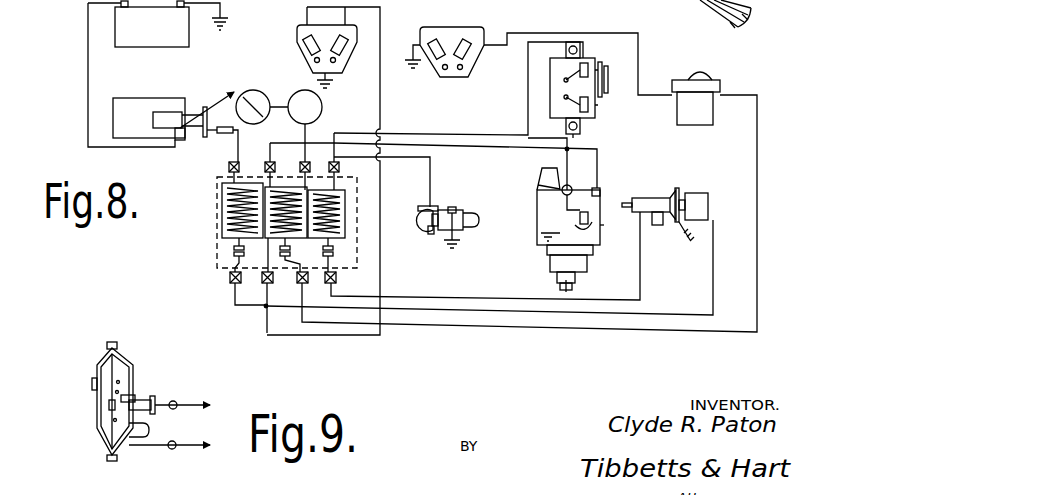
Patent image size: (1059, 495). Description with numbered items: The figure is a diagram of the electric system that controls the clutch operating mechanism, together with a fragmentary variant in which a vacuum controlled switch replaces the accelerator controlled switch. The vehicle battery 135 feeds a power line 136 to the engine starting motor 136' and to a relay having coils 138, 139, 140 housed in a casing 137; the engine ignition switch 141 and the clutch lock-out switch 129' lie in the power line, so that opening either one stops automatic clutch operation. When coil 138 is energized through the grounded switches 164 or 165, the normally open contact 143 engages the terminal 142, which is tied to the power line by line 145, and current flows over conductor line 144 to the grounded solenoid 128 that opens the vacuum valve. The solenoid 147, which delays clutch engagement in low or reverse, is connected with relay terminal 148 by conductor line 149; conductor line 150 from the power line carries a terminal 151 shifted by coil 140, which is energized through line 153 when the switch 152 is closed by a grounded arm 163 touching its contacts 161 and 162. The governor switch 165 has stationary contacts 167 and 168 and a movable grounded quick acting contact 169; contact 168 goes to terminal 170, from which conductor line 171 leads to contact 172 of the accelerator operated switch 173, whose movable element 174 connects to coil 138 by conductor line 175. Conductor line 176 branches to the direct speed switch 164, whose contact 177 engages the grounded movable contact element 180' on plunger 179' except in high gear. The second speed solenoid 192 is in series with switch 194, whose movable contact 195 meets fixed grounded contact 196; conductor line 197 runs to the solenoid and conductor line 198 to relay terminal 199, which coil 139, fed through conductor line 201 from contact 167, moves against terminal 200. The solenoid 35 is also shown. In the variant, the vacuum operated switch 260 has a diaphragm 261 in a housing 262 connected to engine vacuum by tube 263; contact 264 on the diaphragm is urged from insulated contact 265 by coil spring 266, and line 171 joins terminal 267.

In FIG. 8, the solenoid 35 is at (650, 198).
In FIG. 8, the solenoid 128 is at (655, 226).
In FIG. 8, the lock-out switch 129' is at (319, 107).
In FIG. 8, the battery 135 is at (145, 42).
In FIG. 8, the power line 136 is at (188, 75).
In FIG. 8, the engine starting motor 136' is at (173, 109).
In FIG. 8, the casing 137 is at (216, 234).
In FIG. 8, the relay coil 138 is at (345, 206).
In FIG. 8, the relay coil 139 is at (288, 183).
In FIG. 8, the relay coil 140 is at (221, 208).
In FIG. 8, the engine ignition switch 141 is at (260, 100).
In FIG. 8, the terminal 142 is at (334, 250).
In FIG. 8, the contact 143 is at (337, 279).
In FIG. 8, the conductor line 144 is at (447, 300).
In FIG. 8, the line 145 is at (308, 186).
In FIG. 8, the solenoid 147 is at (708, 207).
In FIG. 8, the relay terminal 148 is at (230, 273).
In FIG. 8, the conductor line 149 is at (247, 309).
In FIG. 8, the conductor line 150 is at (236, 152).
In FIG. 8, the terminal 151 is at (234, 252).
In FIG. 8, the switch 152 is at (291, 26).
In FIG. 8, the line 153 is at (381, 105).
In FIG. 8, the contact 161 is at (303, 50).
In FIG. 8, the contact 162 is at (348, 47).
In FIG. 8, the grounded arm 163 is at (327, 68).
In FIG. 8, the direct speed switch 164 is at (453, 207).
In FIG. 8, the switch 165 is at (534, 219).
In FIG. 8, the stationary contact 167 is at (600, 242).
In FIG. 8, the stationary contact 168 is at (580, 217).
In FIG. 8, the movable grounded quick acting contact 169 is at (575, 228).
In FIG. 8, the terminal 170 is at (537, 184).
In FIG. 8, the conductor line 171 is at (568, 152).
In FIG. 9, the conductor line 171 is at (188, 447).
In FIG. 8, the contact 172 is at (594, 112).
In FIG. 8, the accelerator operated switch 173 is at (548, 106).
In FIG. 8, the movable element 174 is at (583, 62).
In FIG. 8, the conductor line 175 is at (473, 133).
In FIG. 9, the conductor line 175 is at (196, 405).
In FIG. 8, the conductor line 176 is at (431, 188).
In FIG. 8, the contact 177 is at (413, 214).
In FIG. 8, the plunger 179' is at (470, 212).
In FIG. 8, the grounded movable contact element 180' is at (418, 245).
In FIG. 8, the solenoid 192 is at (700, 118).
In FIG. 8, the switch 194 is at (458, 31).
In FIG. 8, the movable contact 195 is at (455, 74).
In FIG. 8, the fixed grounded contact 196 is at (438, 74).
In FIG. 8, the conductor line 197 is at (553, 33).
In FIG. 8, the conductor line 198 is at (580, 334).
In FIG. 8, the relay terminal 199 is at (283, 266).
In FIG. 8, the terminal 200 is at (291, 253).
In FIG. 8, the conductor line 201 is at (486, 152).
In FIG. 9, the vacuum operated switch 260 is at (98, 360).
In FIG. 9, the diaphragm 261 is at (116, 365).
In FIG. 9, the housing 262 is at (120, 334).
In FIG. 9, the tube 263 is at (150, 432).
In FIG. 9, the contact 264 is at (108, 406).
In FIG. 9, the insulated contact 265 is at (137, 396).
In FIG. 9, the coil spring 266 is at (120, 383).
In FIG. 9, the terminal 267 is at (172, 450).